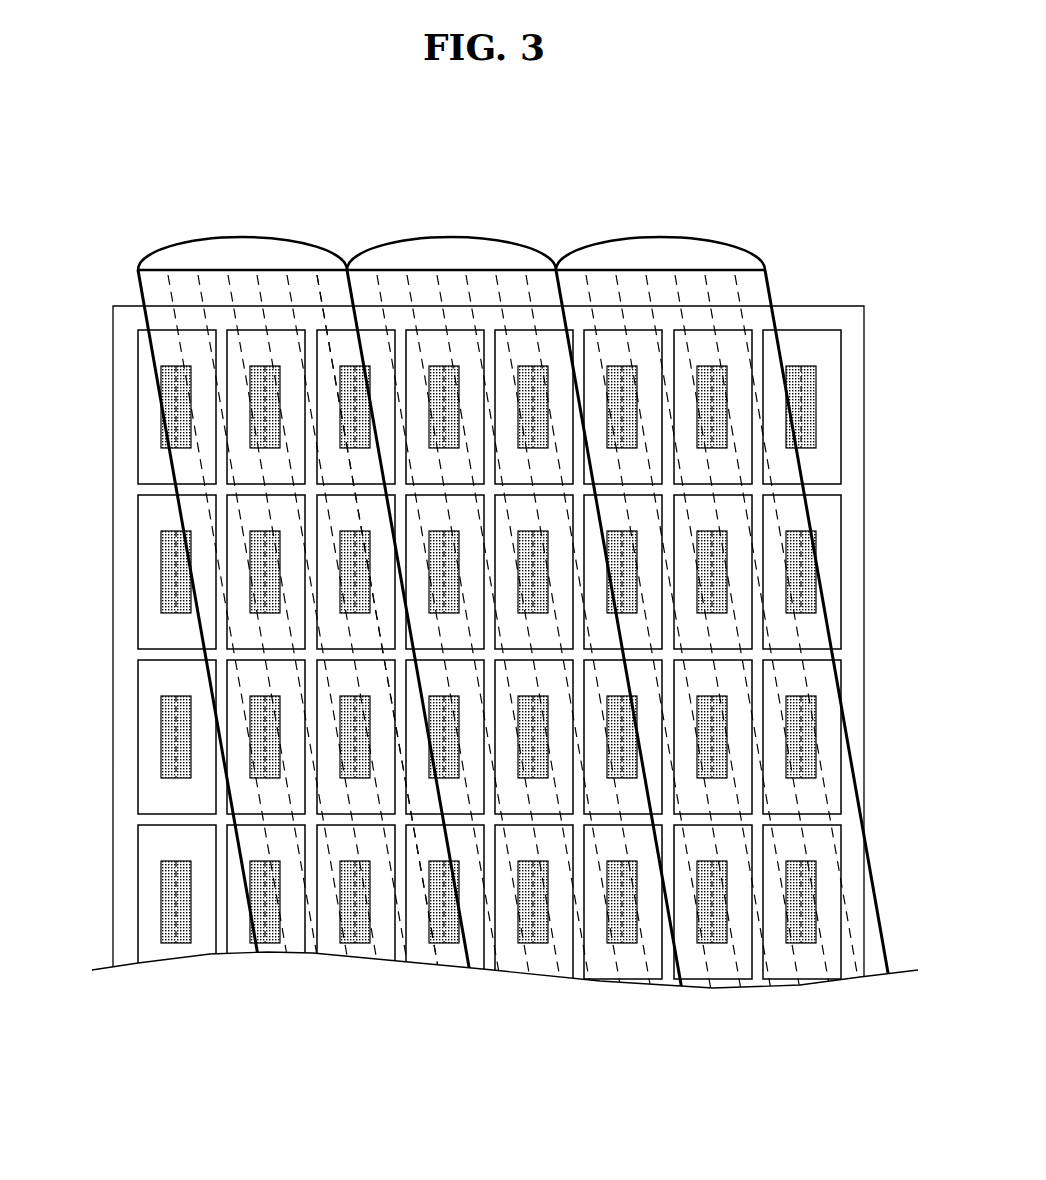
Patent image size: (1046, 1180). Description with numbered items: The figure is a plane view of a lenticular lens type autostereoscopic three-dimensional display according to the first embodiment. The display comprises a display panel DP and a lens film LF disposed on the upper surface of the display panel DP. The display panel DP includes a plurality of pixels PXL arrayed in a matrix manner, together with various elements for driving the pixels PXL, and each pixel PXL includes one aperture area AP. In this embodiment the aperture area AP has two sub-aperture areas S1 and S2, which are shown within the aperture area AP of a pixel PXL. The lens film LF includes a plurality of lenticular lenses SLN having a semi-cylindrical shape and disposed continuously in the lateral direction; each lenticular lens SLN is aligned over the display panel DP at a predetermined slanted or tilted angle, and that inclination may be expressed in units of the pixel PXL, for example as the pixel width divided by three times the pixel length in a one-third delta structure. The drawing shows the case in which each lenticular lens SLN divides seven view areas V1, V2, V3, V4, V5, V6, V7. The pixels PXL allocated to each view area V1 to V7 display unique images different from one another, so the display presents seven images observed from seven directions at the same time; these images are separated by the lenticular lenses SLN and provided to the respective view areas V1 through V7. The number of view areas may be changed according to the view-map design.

The first view area V1 is at (153, 282).
The second view area V2 is at (182, 282).
The third view area V3 is at (212, 282).
The fourth view area V4 is at (241, 282).
The fifth view area V5 is at (271, 282).
The sixth view area V6 is at (301, 282).
The seventh view area V7 is at (331, 282).
The lenticular lens SLN is at (443, 237).
The lens film LF is at (118, 288).
The first sub-aperture area S1 is at (795, 408).
The second sub-aperture area S2 is at (812, 432).
The aperture area AP is at (926, 395).
The pixel PXL is at (841, 515).
The display panel DP is at (865, 556).